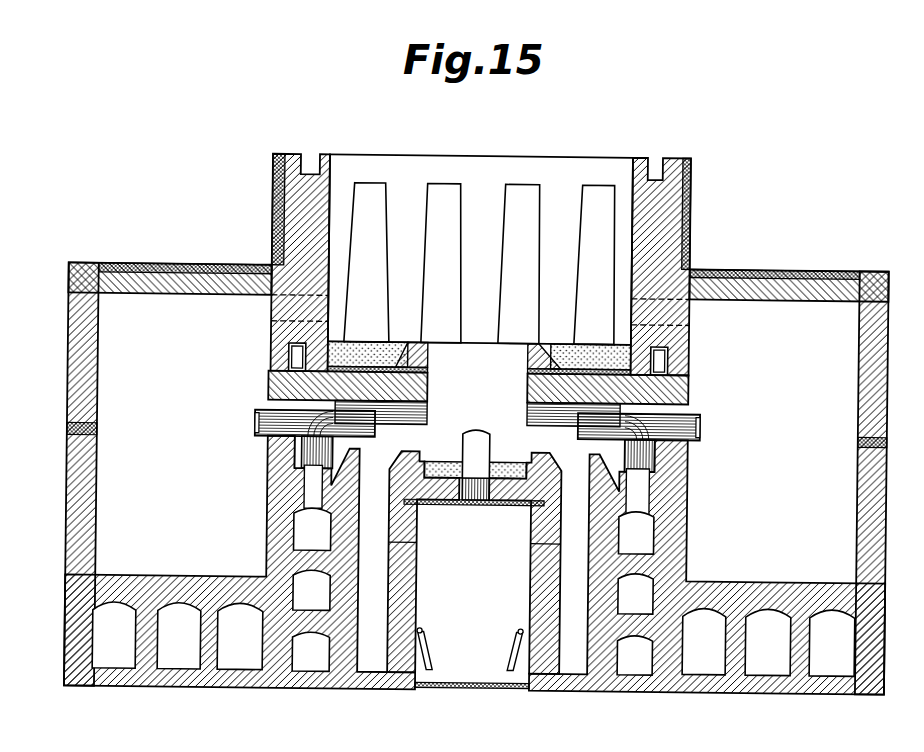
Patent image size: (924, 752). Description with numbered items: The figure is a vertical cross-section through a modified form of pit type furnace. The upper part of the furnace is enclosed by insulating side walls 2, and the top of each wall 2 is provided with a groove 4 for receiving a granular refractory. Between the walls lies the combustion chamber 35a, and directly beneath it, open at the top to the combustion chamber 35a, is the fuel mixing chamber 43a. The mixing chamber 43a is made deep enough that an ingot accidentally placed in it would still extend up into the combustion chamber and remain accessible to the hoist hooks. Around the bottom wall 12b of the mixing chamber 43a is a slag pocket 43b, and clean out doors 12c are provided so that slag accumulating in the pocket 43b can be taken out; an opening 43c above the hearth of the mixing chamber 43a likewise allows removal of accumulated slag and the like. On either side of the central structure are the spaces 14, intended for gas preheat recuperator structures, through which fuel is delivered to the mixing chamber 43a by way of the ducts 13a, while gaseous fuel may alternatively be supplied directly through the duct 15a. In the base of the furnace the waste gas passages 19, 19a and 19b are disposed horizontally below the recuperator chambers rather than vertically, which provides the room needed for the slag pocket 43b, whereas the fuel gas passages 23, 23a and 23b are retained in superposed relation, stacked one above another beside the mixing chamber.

The insulating side wall 2 is at (600, 231).
The groove 4 is at (654, 162).
The combustion chamber 35a is at (480, 249).
The duct 13a is at (733, 413).
The space 14 is at (180, 457).
The duct 15a is at (322, 461).
The fuel mixing chamber 43a is at (478, 384).
The opening 43c is at (478, 451).
The bottom wall 12b is at (533, 536).
The clean out door 12c is at (527, 639).
The slag pocket 43b is at (574, 660).
The fuel gas passage 23b is at (474, 531).
The fuel gas passage 23a is at (473, 592).
The fuel gas passage 23 is at (472, 653).
The waste gas passage 19 is at (409, 638).
The waste gas passage 19a is at (474, 638).
The waste gas passage 19b is at (536, 639).